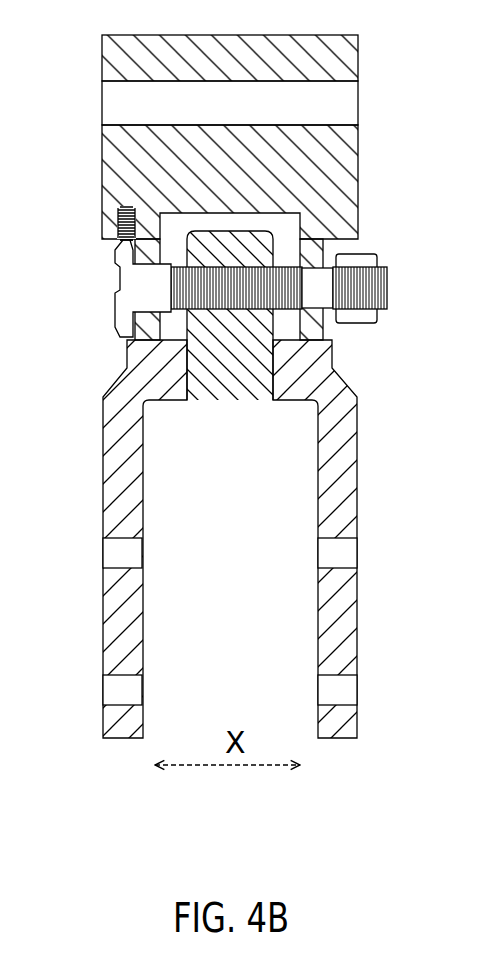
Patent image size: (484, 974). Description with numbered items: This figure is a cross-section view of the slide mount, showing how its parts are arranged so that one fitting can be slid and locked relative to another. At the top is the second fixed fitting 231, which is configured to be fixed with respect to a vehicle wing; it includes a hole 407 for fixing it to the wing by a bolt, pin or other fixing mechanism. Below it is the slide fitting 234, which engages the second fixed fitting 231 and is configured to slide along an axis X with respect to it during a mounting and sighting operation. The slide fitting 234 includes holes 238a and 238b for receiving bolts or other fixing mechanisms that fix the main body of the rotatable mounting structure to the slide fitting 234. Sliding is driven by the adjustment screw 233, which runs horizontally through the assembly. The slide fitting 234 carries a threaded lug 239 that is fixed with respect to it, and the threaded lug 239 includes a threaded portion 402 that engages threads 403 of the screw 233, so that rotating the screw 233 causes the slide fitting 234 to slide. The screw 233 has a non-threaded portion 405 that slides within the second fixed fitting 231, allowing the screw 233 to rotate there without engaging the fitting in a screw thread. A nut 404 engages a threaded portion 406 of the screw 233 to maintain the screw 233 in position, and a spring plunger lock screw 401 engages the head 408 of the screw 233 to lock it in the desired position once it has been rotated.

The hole 407 is at (370, 94).
The second fixed fitting 231 is at (233, 228).
The spring plunger lock screw 401 is at (112, 214).
The threaded portion 402 is at (250, 275).
The threads 403 is at (207, 283).
The adjustment screw 233 is at (243, 286).
The non-threaded portion 405 is at (315, 288).
The threaded portion 406 is at (388, 290).
The nut 404 is at (355, 316).
The head 408 is at (119, 312).
The threaded lug 239 is at (237, 388).
The slide fitting 234 is at (213, 539).
The hole 238a is at (98, 552).
The hole 238b is at (98, 693).